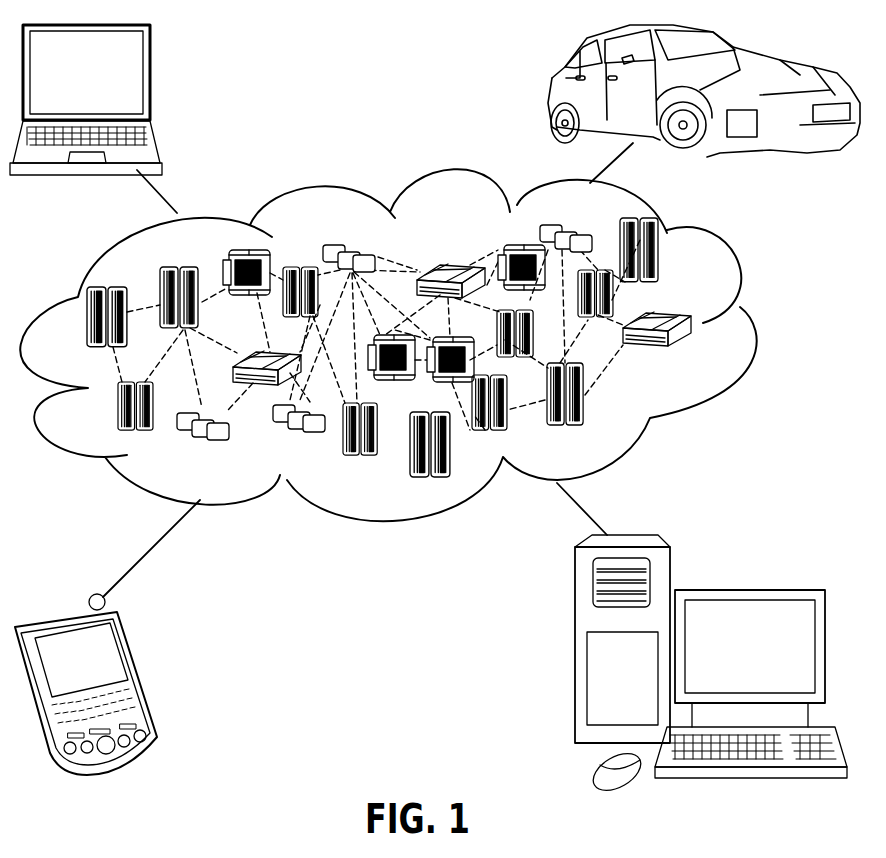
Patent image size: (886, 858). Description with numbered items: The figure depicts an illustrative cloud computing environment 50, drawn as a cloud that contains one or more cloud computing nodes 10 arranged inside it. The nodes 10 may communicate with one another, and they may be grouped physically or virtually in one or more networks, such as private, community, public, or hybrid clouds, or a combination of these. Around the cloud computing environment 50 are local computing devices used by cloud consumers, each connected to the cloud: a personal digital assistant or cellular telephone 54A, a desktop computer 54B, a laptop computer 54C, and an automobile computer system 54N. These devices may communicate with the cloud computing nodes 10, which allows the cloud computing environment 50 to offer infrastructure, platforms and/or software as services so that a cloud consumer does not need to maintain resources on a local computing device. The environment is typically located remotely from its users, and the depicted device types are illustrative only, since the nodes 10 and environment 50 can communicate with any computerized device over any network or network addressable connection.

The cloud computing nodes 10 is at (700, 357).
The cloud computing environment 50 is at (748, 330).
The personal digital assistant or cellular telephone 54A is at (142, 675).
The desktop computer 54B is at (747, 590).
The laptop computer 54C is at (152, 80).
The automobile computer system 54N is at (548, 98).